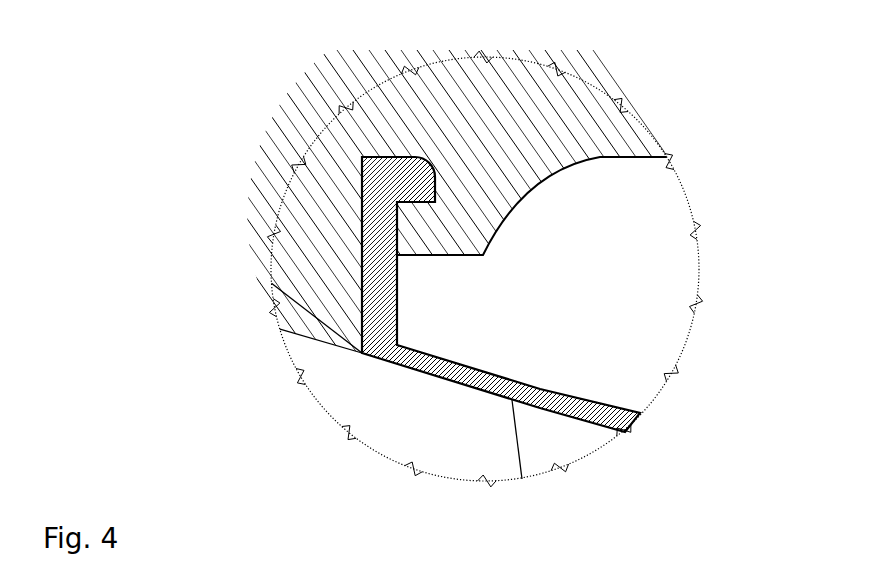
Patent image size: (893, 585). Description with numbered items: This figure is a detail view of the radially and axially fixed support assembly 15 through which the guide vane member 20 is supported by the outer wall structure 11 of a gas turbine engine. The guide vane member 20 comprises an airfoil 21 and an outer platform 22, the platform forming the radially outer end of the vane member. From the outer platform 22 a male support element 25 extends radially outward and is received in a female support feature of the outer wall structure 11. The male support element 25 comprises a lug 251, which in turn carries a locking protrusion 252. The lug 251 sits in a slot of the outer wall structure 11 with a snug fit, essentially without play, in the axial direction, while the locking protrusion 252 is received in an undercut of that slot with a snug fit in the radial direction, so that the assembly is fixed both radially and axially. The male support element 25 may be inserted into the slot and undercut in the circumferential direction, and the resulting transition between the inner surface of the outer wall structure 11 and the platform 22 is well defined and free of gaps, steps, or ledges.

The outer wall structure 11 is at (365, 120).
The radially and axially fixed support assembly 15 is at (333, 258).
The guide vane member 20 is at (533, 448).
The airfoil 21 is at (475, 467).
The outer platform 22 is at (452, 380).
The male support element 25 is at (415, 306).
The lug 251 is at (363, 301).
The locking protrusion 252 is at (412, 187).